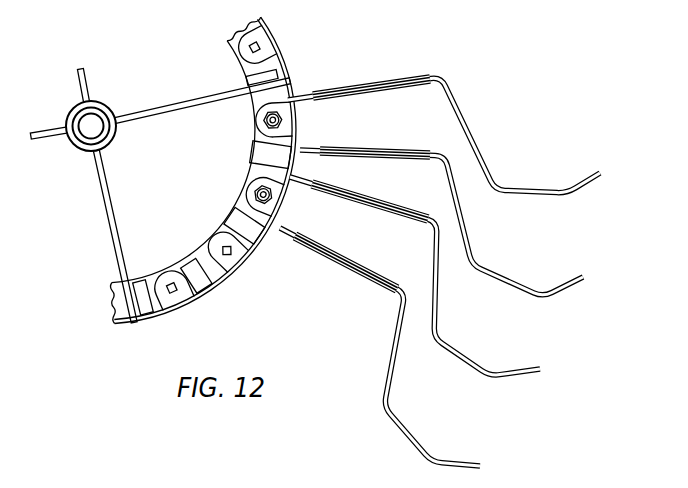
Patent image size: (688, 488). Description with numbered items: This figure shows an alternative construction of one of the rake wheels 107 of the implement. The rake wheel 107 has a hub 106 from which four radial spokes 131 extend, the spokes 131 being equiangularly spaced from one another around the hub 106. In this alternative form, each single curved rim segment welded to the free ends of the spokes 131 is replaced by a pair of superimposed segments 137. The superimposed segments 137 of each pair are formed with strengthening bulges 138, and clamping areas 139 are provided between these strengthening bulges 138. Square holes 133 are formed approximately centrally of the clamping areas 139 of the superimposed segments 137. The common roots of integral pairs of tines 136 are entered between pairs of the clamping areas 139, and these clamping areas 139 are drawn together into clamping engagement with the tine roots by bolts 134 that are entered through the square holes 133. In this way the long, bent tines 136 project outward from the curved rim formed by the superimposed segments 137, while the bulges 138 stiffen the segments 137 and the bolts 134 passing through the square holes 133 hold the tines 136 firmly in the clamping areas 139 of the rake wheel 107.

The hub 106 is at (104, 107).
The rake wheel 107 is at (163, 96).
The radial spokes 131 is at (199, 107).
The square holes 133 is at (266, 44).
The bolts 134 is at (284, 122).
The tines 136 is at (547, 195).
The superimposed segments 137 is at (236, 214).
The strengthening bulges 138 is at (262, 155).
The clamping areas 139 is at (165, 273).